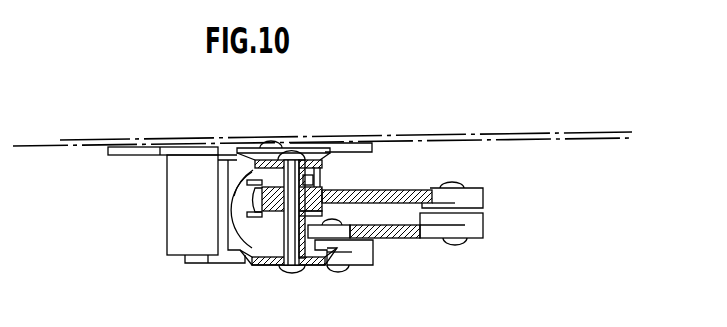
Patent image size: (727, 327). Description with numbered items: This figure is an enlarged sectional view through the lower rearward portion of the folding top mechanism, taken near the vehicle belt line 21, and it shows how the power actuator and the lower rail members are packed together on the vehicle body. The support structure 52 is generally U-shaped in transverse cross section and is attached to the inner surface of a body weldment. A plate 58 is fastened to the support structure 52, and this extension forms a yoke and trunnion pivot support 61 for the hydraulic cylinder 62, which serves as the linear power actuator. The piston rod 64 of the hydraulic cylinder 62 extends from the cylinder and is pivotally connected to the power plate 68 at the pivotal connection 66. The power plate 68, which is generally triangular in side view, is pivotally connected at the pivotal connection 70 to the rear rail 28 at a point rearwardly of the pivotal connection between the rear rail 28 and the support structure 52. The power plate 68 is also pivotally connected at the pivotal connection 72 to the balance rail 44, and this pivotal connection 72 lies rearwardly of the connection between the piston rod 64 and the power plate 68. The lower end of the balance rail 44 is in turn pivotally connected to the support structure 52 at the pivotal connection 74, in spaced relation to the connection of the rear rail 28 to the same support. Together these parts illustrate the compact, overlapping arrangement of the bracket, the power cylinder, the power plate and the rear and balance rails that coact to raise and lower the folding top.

The vehicle belt line 21 is at (375, 137).
The rear rail 28 is at (320, 184).
The balance rail 44 is at (483, 221).
The support structure 52 is at (167, 218).
The plate 58 is at (190, 263).
The yoke and trunnion pivot support 61 is at (270, 140).
The hydraulic cylinder 62 is at (240, 185).
The piston rod 64 is at (250, 206).
The pivotal connection 66 is at (278, 212).
The power plate 68 is at (477, 192).
The pivotal connection 70 is at (290, 273).
The pivotal connection 72 is at (457, 246).
The pivotal connection 74 is at (337, 274).